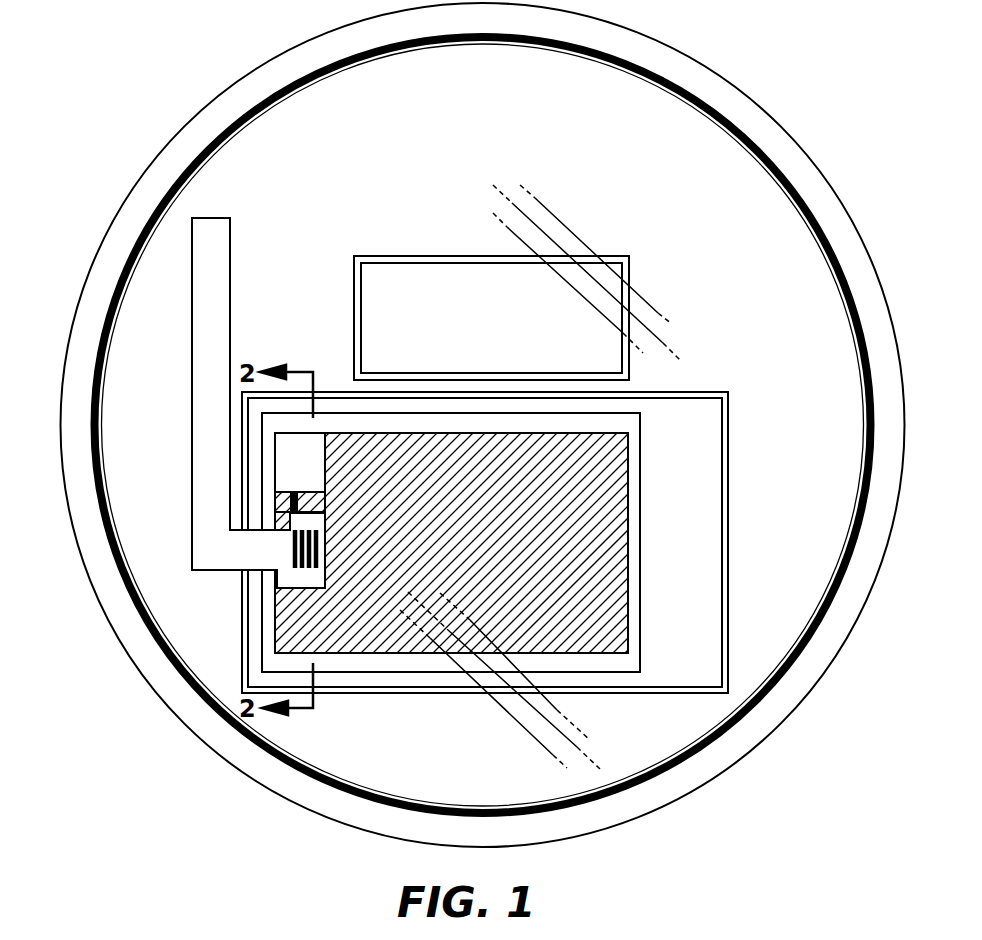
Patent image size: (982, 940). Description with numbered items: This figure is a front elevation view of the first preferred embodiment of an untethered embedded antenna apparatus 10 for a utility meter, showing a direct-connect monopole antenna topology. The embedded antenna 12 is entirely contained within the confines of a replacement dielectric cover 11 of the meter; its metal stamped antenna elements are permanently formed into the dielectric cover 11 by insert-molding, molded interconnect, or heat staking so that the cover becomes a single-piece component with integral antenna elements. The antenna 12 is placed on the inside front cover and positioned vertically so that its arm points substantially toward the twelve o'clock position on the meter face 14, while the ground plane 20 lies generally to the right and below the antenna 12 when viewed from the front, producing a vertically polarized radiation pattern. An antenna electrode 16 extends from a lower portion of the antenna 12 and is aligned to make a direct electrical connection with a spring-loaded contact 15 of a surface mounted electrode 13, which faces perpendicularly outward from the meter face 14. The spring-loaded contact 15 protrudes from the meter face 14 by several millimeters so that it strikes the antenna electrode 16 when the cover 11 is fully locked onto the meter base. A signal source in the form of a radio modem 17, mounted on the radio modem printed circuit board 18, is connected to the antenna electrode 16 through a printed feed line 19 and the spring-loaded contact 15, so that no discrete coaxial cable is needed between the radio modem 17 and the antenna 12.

The untethered embedded antenna apparatus 10 is at (762, 45).
The dielectric cover 11 is at (173, 140).
The embedded antenna 12 is at (205, 320).
The surface mounted electrode 13 is at (288, 580).
The meter face 14 is at (309, 204).
The spring-loaded contact 15 is at (323, 567).
The antenna electrode 16 is at (213, 550).
The radio modem 17 is at (287, 458).
The radio modem printed circuit board 18 is at (642, 573).
The feed line 19 is at (287, 504).
The ground plane 20 is at (588, 608).